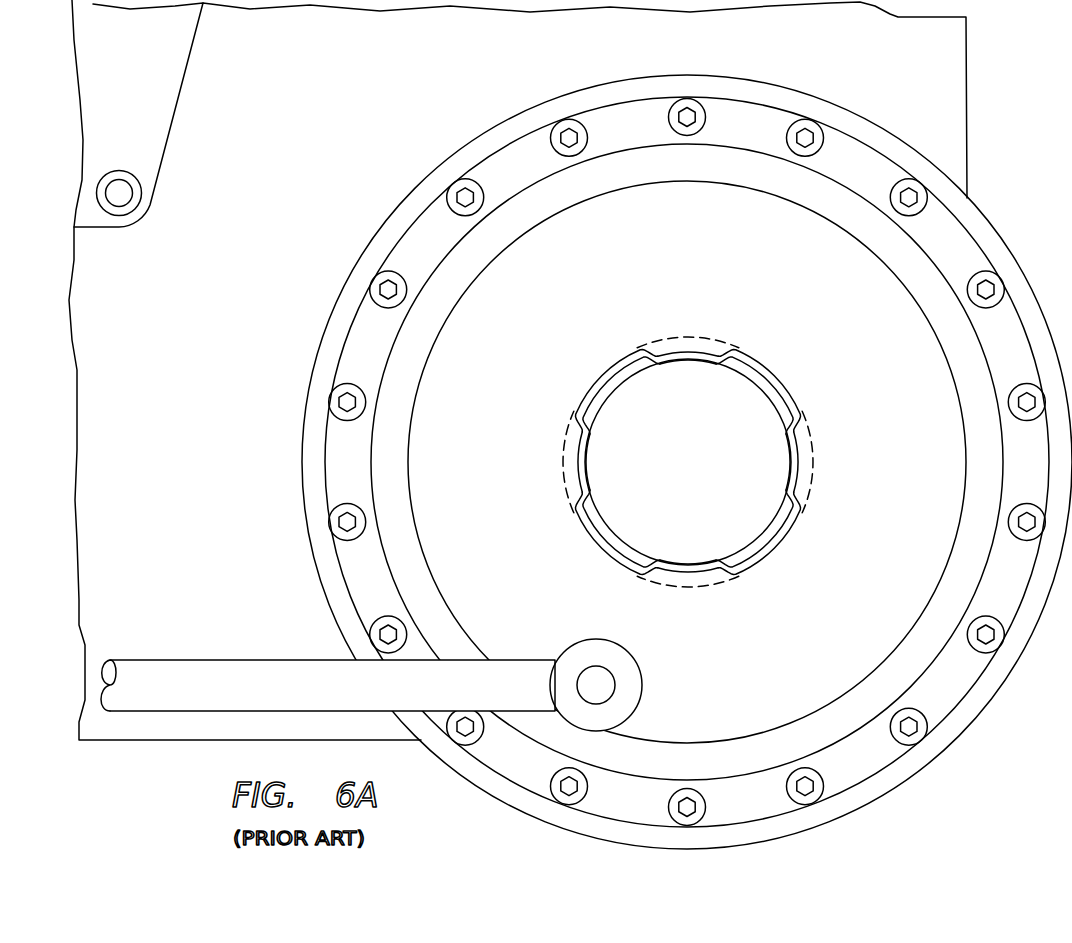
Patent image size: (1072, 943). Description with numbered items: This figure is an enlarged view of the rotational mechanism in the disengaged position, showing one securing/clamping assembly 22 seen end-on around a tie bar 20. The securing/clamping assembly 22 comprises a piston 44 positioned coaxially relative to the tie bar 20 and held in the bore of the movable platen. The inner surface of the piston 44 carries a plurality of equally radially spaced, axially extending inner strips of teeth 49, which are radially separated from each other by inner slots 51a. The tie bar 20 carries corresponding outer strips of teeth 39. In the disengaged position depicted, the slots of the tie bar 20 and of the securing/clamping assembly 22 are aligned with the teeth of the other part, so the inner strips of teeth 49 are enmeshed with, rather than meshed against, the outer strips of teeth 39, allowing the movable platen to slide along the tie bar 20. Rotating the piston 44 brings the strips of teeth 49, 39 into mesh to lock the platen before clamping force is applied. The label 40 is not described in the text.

The securing/clamping assembly 22 is at (508, 142).
The piston 44 is at (515, 512).
The tie bar 20 is at (705, 480).
The outer strips of teeth 39 is at (782, 393).
The inner slots 51a is at (605, 372).
The notch segment 40 is at (696, 362).
The inner strips of teeth 49 is at (808, 450).